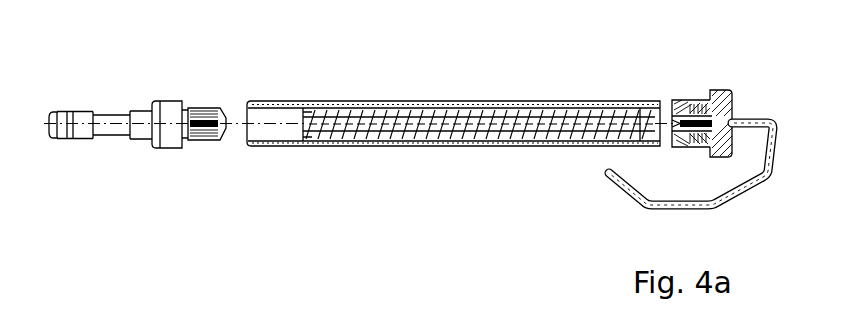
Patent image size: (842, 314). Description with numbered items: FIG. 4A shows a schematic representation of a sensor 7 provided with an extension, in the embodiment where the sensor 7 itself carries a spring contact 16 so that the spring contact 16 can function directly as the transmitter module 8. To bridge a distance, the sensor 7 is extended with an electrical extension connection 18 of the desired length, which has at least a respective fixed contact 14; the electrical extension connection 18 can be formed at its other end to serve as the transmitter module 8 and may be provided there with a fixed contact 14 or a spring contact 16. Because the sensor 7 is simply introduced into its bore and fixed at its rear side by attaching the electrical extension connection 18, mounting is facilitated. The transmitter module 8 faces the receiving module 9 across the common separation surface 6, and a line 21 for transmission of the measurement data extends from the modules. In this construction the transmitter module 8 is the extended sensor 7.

The separation surface 6 is at (669, 103).
The sensor 7 is at (164, 137).
The transmitter module 8 is at (619, 110).
The receiving module 9 is at (698, 99).
The fixed contact 14 is at (320, 131).
The spring contact 16 is at (225, 124).
The electrical extension connection 18 is at (440, 132).
The line 21 is at (742, 191).